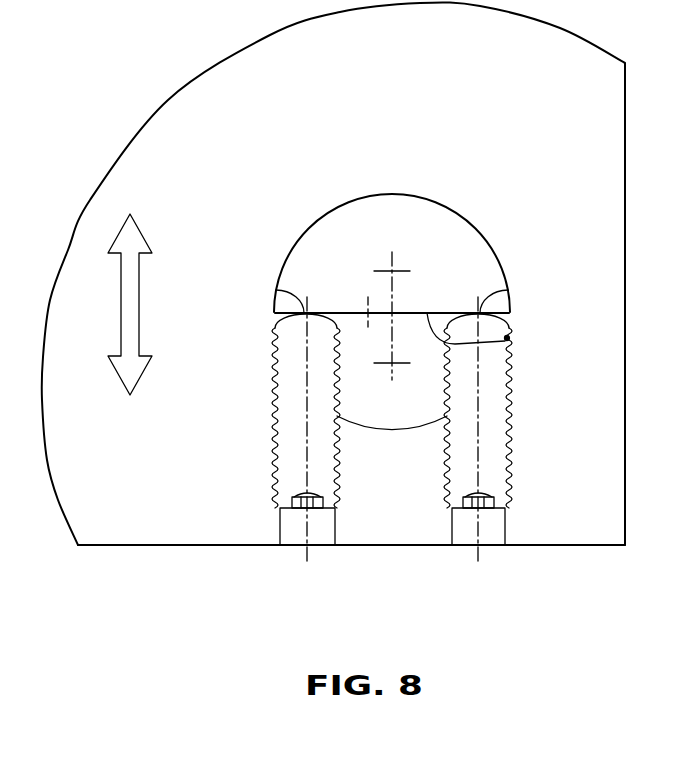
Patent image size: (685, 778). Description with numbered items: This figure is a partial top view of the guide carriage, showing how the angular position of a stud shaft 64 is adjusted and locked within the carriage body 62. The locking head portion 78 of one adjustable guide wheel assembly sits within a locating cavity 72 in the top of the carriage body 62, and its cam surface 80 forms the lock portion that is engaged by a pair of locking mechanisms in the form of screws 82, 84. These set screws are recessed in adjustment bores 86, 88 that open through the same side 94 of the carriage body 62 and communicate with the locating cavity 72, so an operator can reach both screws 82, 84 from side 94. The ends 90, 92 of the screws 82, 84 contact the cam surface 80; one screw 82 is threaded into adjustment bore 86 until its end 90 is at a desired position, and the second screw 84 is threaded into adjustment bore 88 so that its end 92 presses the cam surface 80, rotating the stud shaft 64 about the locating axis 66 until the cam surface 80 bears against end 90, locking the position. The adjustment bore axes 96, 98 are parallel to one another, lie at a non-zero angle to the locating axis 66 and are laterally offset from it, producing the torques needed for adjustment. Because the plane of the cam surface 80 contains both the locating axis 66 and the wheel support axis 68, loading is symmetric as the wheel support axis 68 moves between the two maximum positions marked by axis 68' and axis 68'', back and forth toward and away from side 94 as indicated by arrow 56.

The arrow 56 is at (121, 317).
The carriage body 62 is at (418, 72).
The stud shaft 64 is at (392, 312).
The locating axis 66 is at (438, 320).
The wheel support axis 68 is at (289, 282).
The axis 68' is at (401, 260).
The axis 68'' is at (404, 427).
The locating cavity 72 is at (305, 245).
The locking head portion 78 is at (337, 232).
The cam surface 80 is at (507, 338).
The screw 82 is at (290, 370).
The screw 84 is at (493, 372).
The adjustment bore 86 is at (270, 410).
The adjustment bore 88 is at (516, 410).
The end 90 is at (276, 290).
The end 92 is at (508, 291).
The side 94 is at (152, 546).
The adjustment bore axis 96 is at (305, 476).
The adjustment bore axis 98 is at (478, 478).